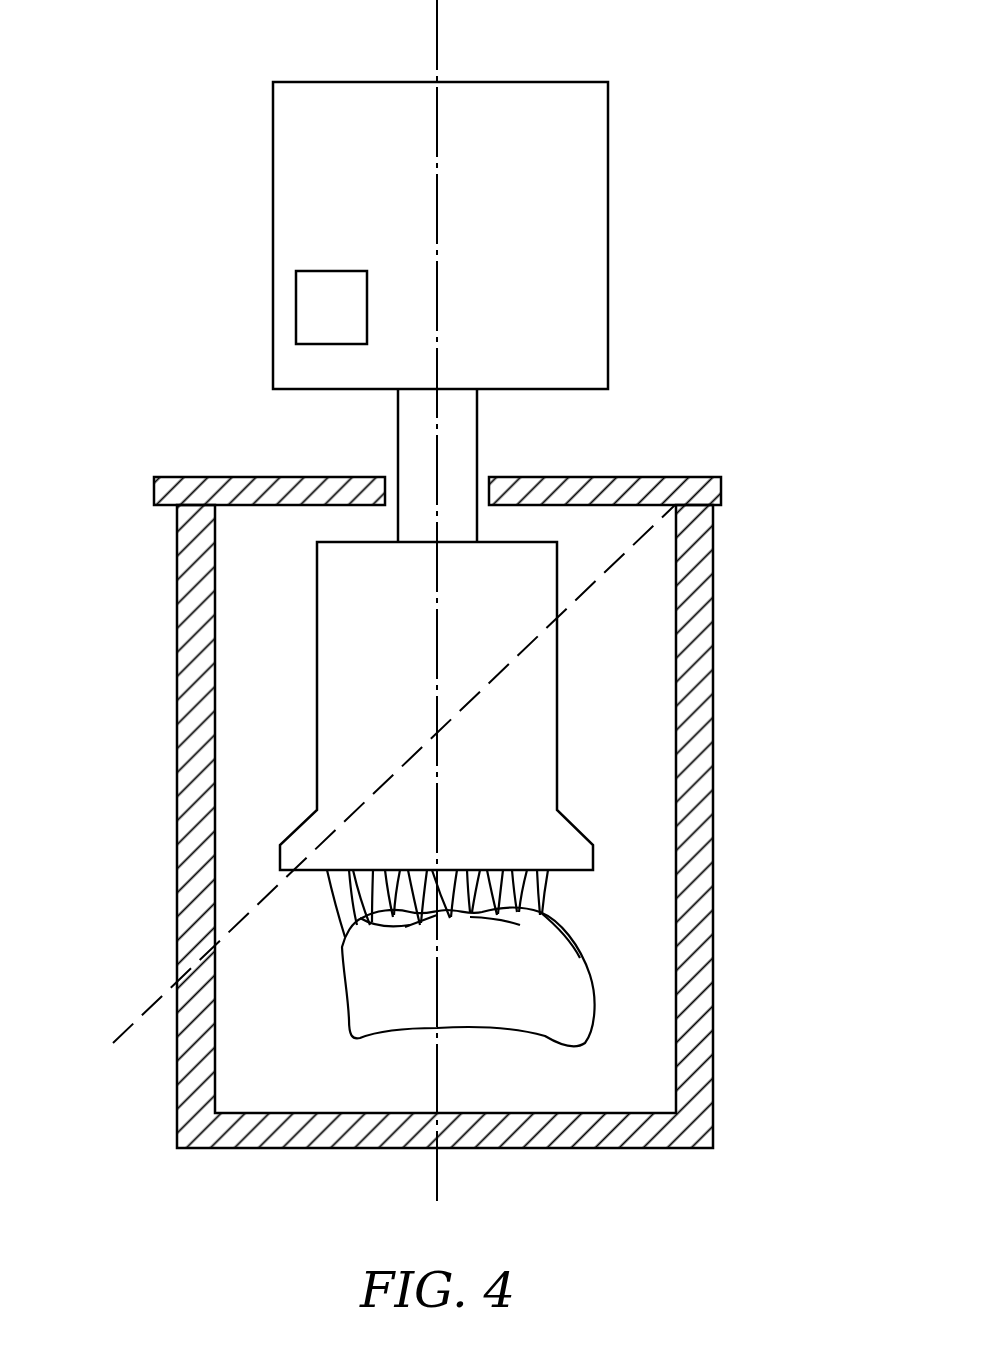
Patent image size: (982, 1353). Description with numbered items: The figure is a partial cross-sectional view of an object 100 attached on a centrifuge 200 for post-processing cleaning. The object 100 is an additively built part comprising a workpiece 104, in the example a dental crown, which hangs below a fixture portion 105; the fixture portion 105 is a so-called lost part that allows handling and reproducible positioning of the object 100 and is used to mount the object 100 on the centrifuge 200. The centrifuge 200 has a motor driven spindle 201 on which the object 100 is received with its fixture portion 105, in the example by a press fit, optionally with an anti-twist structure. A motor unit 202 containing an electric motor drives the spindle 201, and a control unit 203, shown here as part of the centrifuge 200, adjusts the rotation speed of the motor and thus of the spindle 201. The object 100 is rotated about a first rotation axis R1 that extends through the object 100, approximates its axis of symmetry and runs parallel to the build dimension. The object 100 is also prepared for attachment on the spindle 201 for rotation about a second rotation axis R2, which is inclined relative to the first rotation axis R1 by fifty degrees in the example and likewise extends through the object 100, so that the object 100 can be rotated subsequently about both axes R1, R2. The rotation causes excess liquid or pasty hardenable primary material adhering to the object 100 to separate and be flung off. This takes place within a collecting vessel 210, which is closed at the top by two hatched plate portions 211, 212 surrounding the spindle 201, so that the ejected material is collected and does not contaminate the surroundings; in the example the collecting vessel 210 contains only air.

The object 100 is at (463, 818).
The workpiece 104 is at (363, 992).
The fixture portion 105 is at (332, 611).
The centrifuge 200 is at (488, 312).
The spindle 201 is at (406, 421).
The motor unit 202 is at (580, 131).
The control unit 203 is at (315, 307).
The collecting vessel 210 is at (697, 1028).
The left lid plate 211 is at (392, 478).
The right lid plate 212 is at (703, 487).
The first rotation axis R1 is at (438, 1185).
The second rotation axis R2 is at (140, 1018).